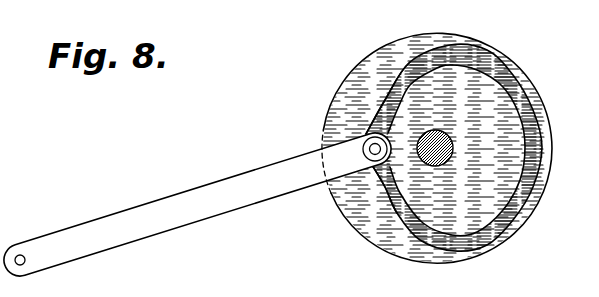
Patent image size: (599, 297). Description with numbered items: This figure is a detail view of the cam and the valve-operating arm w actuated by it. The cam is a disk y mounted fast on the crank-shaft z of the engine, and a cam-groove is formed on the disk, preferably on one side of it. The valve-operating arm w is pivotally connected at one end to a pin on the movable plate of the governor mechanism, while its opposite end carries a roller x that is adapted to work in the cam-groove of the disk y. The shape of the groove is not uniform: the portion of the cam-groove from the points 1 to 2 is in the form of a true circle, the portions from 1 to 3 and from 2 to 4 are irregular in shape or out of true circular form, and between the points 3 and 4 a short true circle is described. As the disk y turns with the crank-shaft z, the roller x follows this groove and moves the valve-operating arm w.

The point of cam-groove 1 is at (463, 53).
The point of cam-groove 2 is at (468, 242).
The point of cam-groove 3 is at (377, 121).
The point of cam-groove 4 is at (377, 182).
The valve-operating arm w is at (202, 216).
The roller x is at (363, 150).
The disk y is at (395, 248).
The crank-shaft z is at (543, 163).